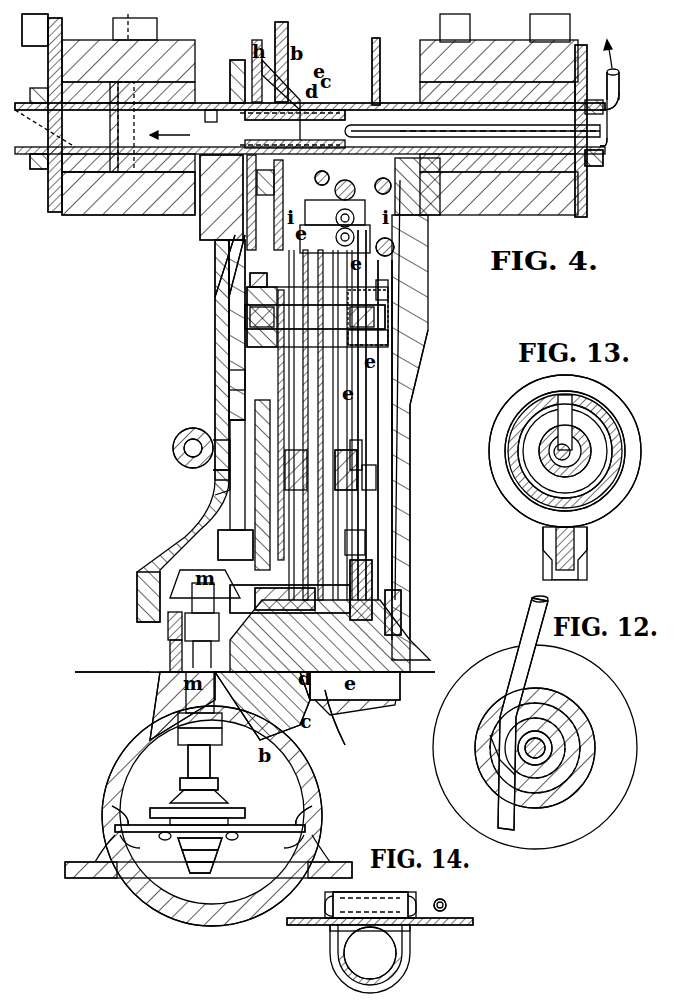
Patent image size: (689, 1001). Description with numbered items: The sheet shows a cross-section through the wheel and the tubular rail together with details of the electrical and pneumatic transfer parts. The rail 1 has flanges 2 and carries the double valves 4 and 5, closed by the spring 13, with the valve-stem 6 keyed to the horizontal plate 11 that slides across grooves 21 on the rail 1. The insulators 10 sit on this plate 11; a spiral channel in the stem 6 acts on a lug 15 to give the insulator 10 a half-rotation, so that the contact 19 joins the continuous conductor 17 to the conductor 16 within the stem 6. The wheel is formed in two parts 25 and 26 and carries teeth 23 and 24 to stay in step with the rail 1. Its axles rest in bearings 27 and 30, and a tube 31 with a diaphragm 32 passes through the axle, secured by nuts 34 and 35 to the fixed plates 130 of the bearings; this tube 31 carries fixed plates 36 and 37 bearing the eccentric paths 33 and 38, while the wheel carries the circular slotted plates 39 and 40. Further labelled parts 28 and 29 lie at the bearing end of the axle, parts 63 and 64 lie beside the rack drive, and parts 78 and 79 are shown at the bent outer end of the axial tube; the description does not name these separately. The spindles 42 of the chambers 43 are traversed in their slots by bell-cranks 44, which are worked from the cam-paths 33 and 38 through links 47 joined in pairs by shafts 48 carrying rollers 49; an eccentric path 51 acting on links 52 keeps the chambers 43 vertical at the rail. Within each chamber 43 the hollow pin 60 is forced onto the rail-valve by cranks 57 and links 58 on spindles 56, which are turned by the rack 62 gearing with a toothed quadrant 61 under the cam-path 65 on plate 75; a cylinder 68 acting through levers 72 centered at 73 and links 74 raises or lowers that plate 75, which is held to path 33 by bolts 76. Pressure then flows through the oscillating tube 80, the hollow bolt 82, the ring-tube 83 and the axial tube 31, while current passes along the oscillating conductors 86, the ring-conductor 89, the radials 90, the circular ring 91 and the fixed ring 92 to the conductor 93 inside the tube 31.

In FIG. 4, the rail 1 is at (135, 748).
In FIG. 4, the flanges 2 is at (208, 858).
In FIG. 4, the valve 4 is at (155, 703).
In FIG. 4, the valve 5 is at (150, 720).
In FIG. 4, the valve-stem 6 is at (210, 760).
In FIG. 12, the valve-stem 6 is at (560, 692).
In FIG. 4, the insulator 10 is at (216, 784).
In FIG. 12, the insulator 10 is at (575, 700).
In FIG. 4, the horizontal plate 11 is at (276, 824).
In FIG. 4, the spring 13 is at (215, 852).
In FIG. 12, the lug 15 is at (574, 793).
In FIG. 12, the conductor 16 is at (588, 768).
In FIG. 4, the continuous conductor 17 is at (165, 806).
In FIG. 12, the continuous conductor 17 is at (522, 626).
In FIG. 12, the contact 19 is at (592, 742).
In FIG. 4, the grooves 21 is at (140, 835).
In FIG. 4, the teeth 23 is at (318, 742).
In FIG. 4, the teeth 24 is at (320, 695).
In FIG. 4, the wheel part 25 is at (395, 582).
In FIG. 4, the wheel part 26 is at (215, 360).
In FIG. 4, the bearing 27 is at (392, 235).
In FIG. 4, the casing wall 28 is at (400, 190).
In FIG. 4, the end plate 29 is at (50, 185).
In FIG. 4, the bearing 30 is at (80, 214).
In FIG. 4, the tube 31 is at (388, 108).
In FIG. 13, the tube 31 is at (540, 440).
In FIG. 4, the diaphragm 32 is at (240, 128).
In FIG. 4, the eccentric path 33 is at (388, 338).
In FIG. 4, the nut 34 is at (598, 166).
In FIG. 4, the nut 35 is at (48, 168).
In FIG. 4, the fixed plate 36 is at (372, 48).
In FIG. 14, the fixed plate 36 is at (445, 925).
In FIG. 4, the fixed plate 37 is at (290, 30).
In FIG. 4, the eccentric path 38 is at (240, 342).
In FIG. 4, the circular slotted plate 39 is at (360, 545).
In FIG. 4, the circular slotted plate 40 is at (230, 380).
In FIG. 4, the spindle 42 is at (360, 680).
In FIG. 4, the chamber 43 is at (170, 658).
In FIG. 4, the bell-crank 44 is at (372, 565).
In FIG. 4, the link 47 is at (372, 499).
In FIG. 4, the shaft 48 is at (315, 317).
In FIG. 4, the roller 49 is at (390, 317).
In FIG. 4, the eccentric path 51 is at (235, 258).
In FIG. 4, the link 52 is at (412, 378).
In FIG. 4, the spindle 56 is at (285, 599).
In FIG. 4, the crank 57 is at (290, 599).
In FIG. 4, the link 58 is at (168, 636).
In FIG. 4, the hollow pin 60 is at (160, 683).
In FIG. 4, the toothed quadrant 61 is at (402, 605).
In FIG. 4, the rack 62 is at (365, 523).
In FIG. 4, the collar 63 is at (360, 453).
In FIG. 4, the wall 64 is at (392, 415).
In FIG. 4, the cam-path 65 is at (370, 476).
In FIG. 4, the cylinder 68 is at (378, 262).
In FIG. 14, the cylinder 68 is at (370, 953).
In FIG. 4, the lever 72 is at (385, 184).
In FIG. 4, the lever center 73 is at (318, 180).
In FIG. 4, the link 74 is at (396, 247).
In FIG. 14, the link 74 is at (345, 892).
In FIG. 4, the plate 75 is at (372, 305).
In FIG. 14, the plate 75 is at (370, 905).
In FIG. 4, the bolt 76 is at (380, 292).
In FIG. 4, the bent pipe 78 is at (612, 138).
In FIG. 4, the pipe end 79 is at (614, 82).
In FIG. 14, the pipe end 79 is at (446, 900).
In FIG. 4, the oscillating tube 80 is at (235, 545).
In FIG. 4, the hollow bolt 82 is at (190, 432).
In FIG. 4, the ring-tube 83 is at (184, 456).
In FIG. 4, the oscillating conductor 86 is at (150, 580).
In FIG. 4, the ring-conductor 89 is at (215, 478).
In FIG. 4, the radial 90 is at (225, 291).
In FIG. 13, the radial 90 is at (545, 538).
In FIG. 4, the circular ring 91 is at (246, 190).
In FIG. 13, the circular ring 91 is at (512, 472).
In FIG. 4, the fixed ring 92 is at (240, 95).
In FIG. 13, the fixed ring 92 is at (525, 492).
In FIG. 4, the conductor 93 is at (345, 103).
In FIG. 13, the conductor 93 is at (540, 400).
In FIG. 4, the fixed plate 130 is at (48, 208).